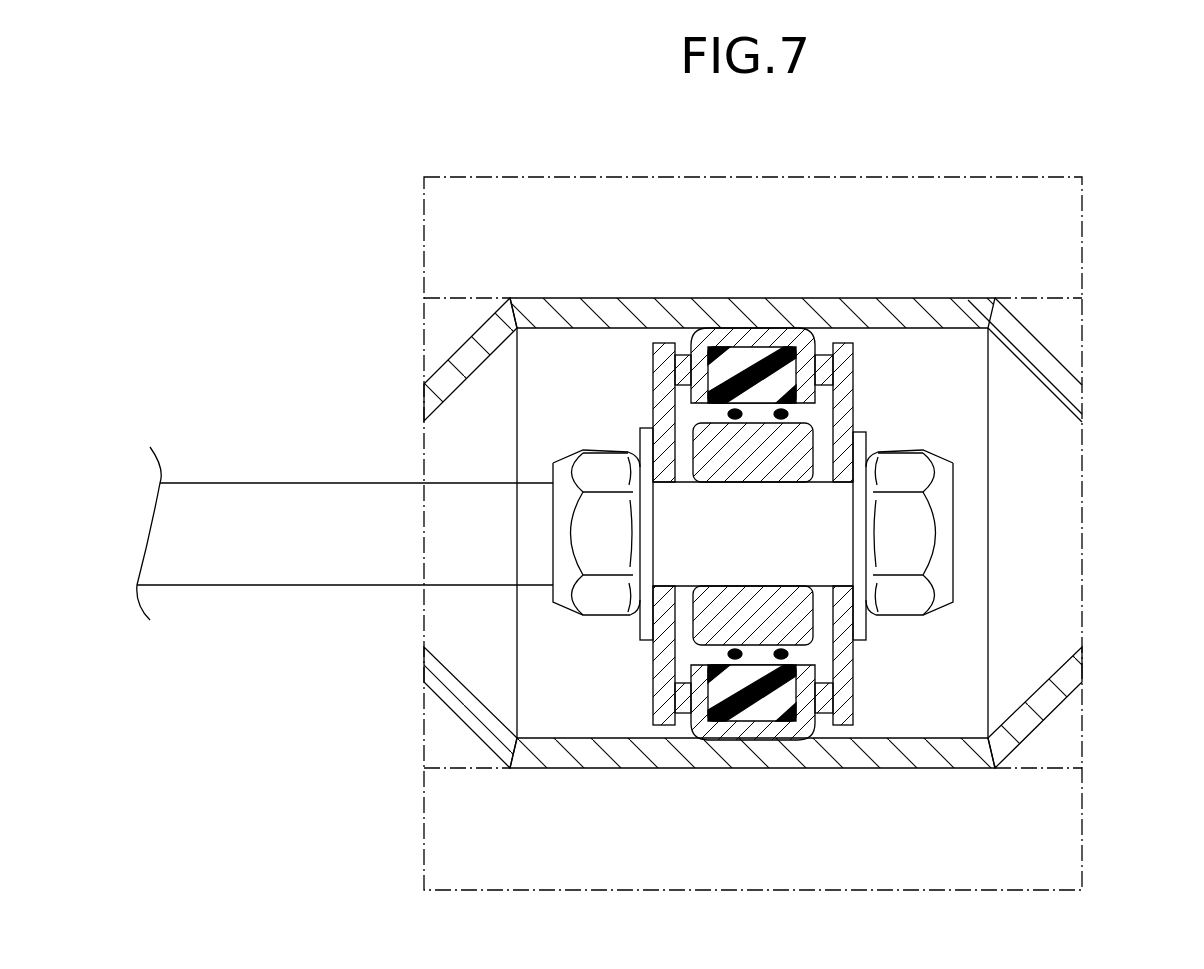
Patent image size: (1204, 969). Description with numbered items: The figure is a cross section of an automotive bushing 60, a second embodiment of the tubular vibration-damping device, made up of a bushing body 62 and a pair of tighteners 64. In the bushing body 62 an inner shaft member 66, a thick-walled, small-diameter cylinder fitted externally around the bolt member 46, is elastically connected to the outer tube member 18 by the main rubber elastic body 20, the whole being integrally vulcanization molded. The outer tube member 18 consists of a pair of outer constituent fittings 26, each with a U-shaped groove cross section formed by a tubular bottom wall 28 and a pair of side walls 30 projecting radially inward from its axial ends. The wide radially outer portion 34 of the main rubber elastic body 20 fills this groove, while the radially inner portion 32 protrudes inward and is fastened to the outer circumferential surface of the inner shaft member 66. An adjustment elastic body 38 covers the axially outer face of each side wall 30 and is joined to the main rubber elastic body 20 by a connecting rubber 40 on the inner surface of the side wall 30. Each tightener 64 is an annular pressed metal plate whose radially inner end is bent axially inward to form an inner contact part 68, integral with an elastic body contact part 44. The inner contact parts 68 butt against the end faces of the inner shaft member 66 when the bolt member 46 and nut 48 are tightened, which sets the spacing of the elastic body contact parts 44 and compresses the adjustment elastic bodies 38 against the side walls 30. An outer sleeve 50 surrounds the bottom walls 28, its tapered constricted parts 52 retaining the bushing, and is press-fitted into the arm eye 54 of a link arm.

The outer tube member 18 is at (824, 331).
The main rubber elastic body 20 is at (727, 340).
The outer constituent fitting 26 is at (791, 320).
The bottom wall 28 is at (753, 337).
The side wall 30 is at (698, 366).
The radially inner portion 32 is at (750, 407).
The radially outer portion 34 is at (750, 372).
The adjustment elastic body 38 is at (677, 362).
The connecting rubber 40 is at (700, 673).
The elastic body contact part 44 is at (663, 700).
The bolt member 46 is at (915, 527).
The nut 48 is at (593, 532).
The outer sleeve 50 is at (942, 290).
The constricted part 52 is at (483, 343).
The arm eye 54 is at (532, 197).
The bushing 60 is at (1130, 350).
The bushing body 62 is at (836, 737).
The tightener 64 is at (646, 698).
The inner shaft member 66 is at (750, 460).
The inner contact part 68 is at (683, 594).